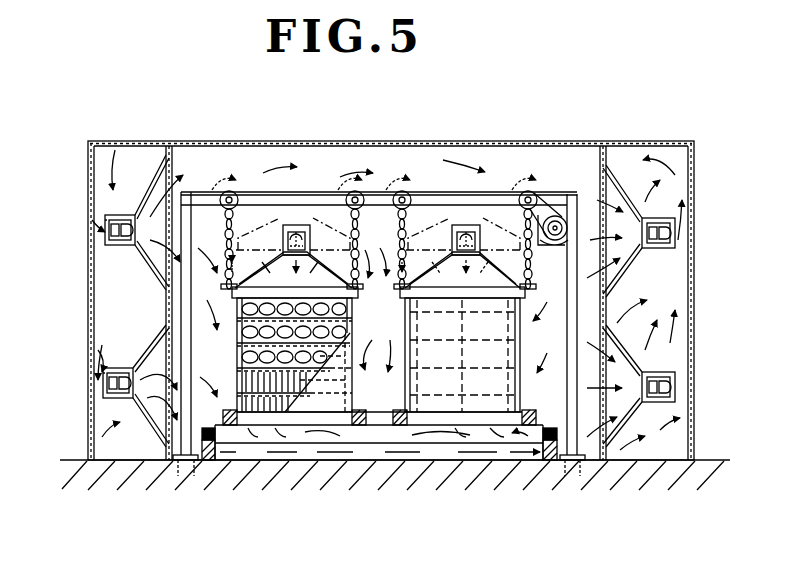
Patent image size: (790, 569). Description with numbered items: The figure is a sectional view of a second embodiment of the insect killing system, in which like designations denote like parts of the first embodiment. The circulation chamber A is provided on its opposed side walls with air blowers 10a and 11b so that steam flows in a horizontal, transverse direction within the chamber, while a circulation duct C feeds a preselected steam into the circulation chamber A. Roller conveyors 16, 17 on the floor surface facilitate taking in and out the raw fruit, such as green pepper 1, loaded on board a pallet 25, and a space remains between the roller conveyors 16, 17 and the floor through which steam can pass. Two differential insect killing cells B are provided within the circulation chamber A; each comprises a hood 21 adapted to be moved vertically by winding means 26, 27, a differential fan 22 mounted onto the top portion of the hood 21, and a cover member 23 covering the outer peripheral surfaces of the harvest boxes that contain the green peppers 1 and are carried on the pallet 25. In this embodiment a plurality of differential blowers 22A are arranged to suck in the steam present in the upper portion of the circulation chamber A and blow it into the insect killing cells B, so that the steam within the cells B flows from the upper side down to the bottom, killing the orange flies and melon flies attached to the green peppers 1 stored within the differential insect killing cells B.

The green pepper 1 is at (352, 300).
The air blower 10a is at (104, 243).
The air blower 11b is at (676, 232).
The roller conveyor 16 is at (322, 433).
The roller conveyor 17 is at (205, 456).
The hood 21 is at (317, 270).
The differential fan 22 is at (463, 222).
The differential blower 22A is at (312, 222).
The cover member 23 is at (320, 385).
The pallet 25 is at (358, 427).
The winding means 26 is at (222, 194).
The winding means 27 is at (233, 208).
The circulation chamber A is at (578, 140).
The differential insect killing cell B is at (356, 355).
The circulation duct C is at (673, 145).